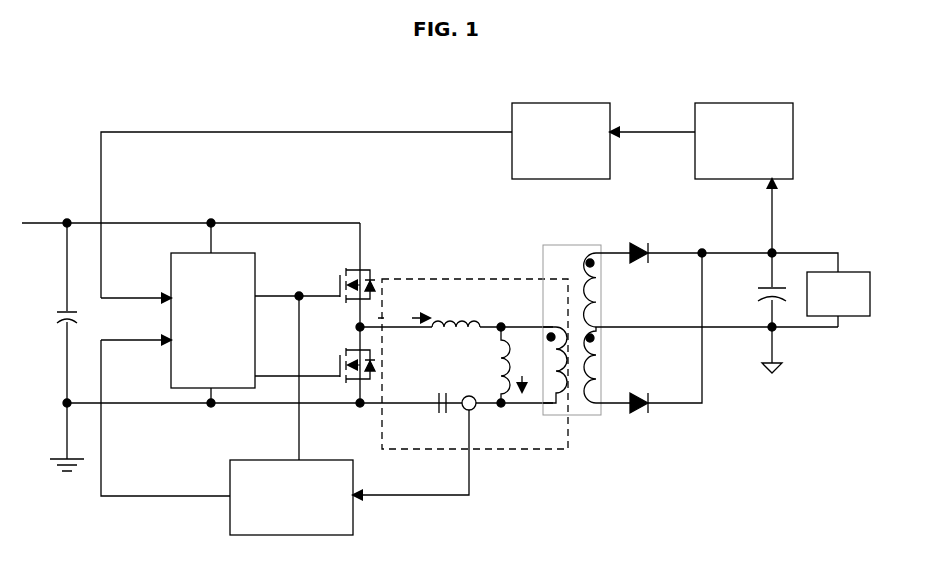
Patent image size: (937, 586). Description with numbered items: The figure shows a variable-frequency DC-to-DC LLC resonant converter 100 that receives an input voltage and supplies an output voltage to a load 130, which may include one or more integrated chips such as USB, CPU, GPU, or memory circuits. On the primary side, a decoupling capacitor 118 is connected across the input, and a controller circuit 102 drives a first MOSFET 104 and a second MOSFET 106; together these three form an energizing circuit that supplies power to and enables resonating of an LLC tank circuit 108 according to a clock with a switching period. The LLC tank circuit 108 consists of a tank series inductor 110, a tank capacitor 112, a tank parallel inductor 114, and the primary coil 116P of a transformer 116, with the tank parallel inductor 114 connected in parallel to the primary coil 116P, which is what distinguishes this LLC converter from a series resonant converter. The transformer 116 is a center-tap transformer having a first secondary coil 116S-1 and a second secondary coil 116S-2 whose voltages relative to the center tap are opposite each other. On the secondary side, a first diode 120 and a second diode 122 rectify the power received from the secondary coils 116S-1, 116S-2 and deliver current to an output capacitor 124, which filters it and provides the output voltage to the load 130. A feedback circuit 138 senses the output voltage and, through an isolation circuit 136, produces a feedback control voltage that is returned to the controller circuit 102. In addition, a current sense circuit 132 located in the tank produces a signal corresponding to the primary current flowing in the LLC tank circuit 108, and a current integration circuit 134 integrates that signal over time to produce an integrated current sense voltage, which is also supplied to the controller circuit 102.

The variable-frequency DC-to-DC LLC resonant converter 100 is at (464, 309).
The controller circuit 102 is at (173, 252).
The first MOSFET 104 is at (346, 266).
The second MOSFET 106 is at (346, 346).
The LLC tank circuit 108 is at (435, 278).
The tank series inductor 110 is at (457, 319).
The tank capacitor 112 is at (438, 415).
The tank parallel inductor 114 is at (497, 376).
The transformer 116 is at (543, 244).
The primary coil 116P is at (562, 385).
The first secondary coil 116S-1 is at (587, 366).
The second secondary coil 116S-2 is at (587, 306).
The decoupling capacitor 118 is at (61, 310).
The first diode 120 is at (650, 243).
The second diode 122 is at (650, 413).
The output capacitor 124 is at (760, 287).
The load 130 is at (851, 271).
The current sense circuit 132 is at (475, 410).
The current integration circuit 134 is at (263, 536).
The isolation circuit 136 is at (514, 102).
The feedback circuit 138 is at (705, 80).